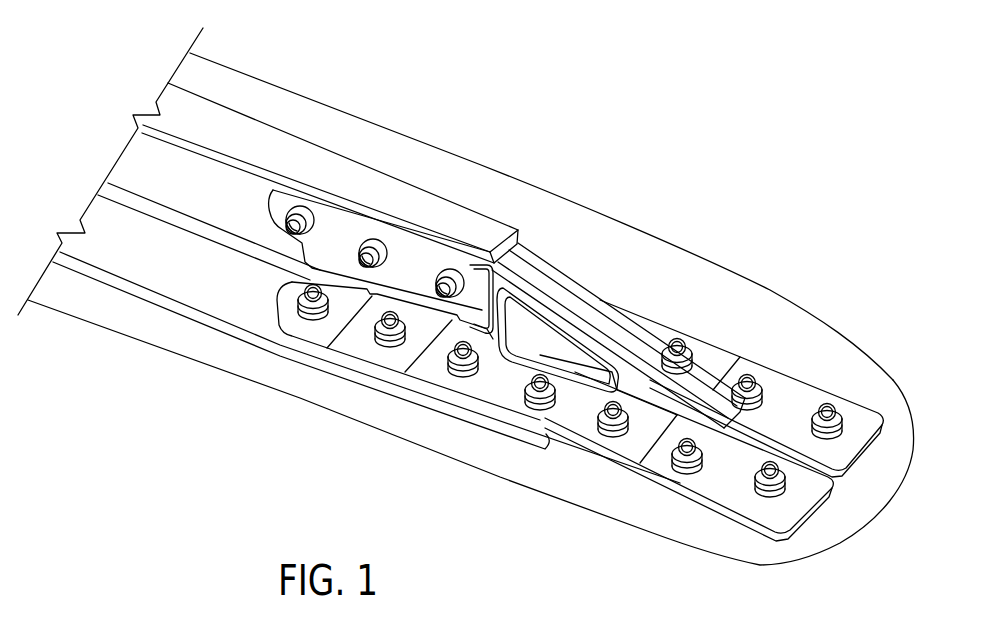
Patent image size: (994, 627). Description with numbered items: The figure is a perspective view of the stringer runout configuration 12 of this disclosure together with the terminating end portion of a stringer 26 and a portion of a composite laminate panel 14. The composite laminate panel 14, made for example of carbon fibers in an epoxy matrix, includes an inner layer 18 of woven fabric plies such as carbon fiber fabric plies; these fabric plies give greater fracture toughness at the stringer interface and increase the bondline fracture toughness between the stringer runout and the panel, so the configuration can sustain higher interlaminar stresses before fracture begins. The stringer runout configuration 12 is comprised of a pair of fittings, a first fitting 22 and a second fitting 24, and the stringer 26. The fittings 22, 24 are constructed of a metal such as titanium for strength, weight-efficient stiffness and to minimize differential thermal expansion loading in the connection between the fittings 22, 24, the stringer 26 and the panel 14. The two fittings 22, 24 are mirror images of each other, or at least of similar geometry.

The stringer runout configuration 12 is at (571, 119).
The composite laminate panel 14 is at (368, 143).
The inner layer 18 is at (692, 265).
The first fitting 22 is at (808, 382).
The second fitting 24 is at (667, 497).
The stringer 26 is at (232, 205).